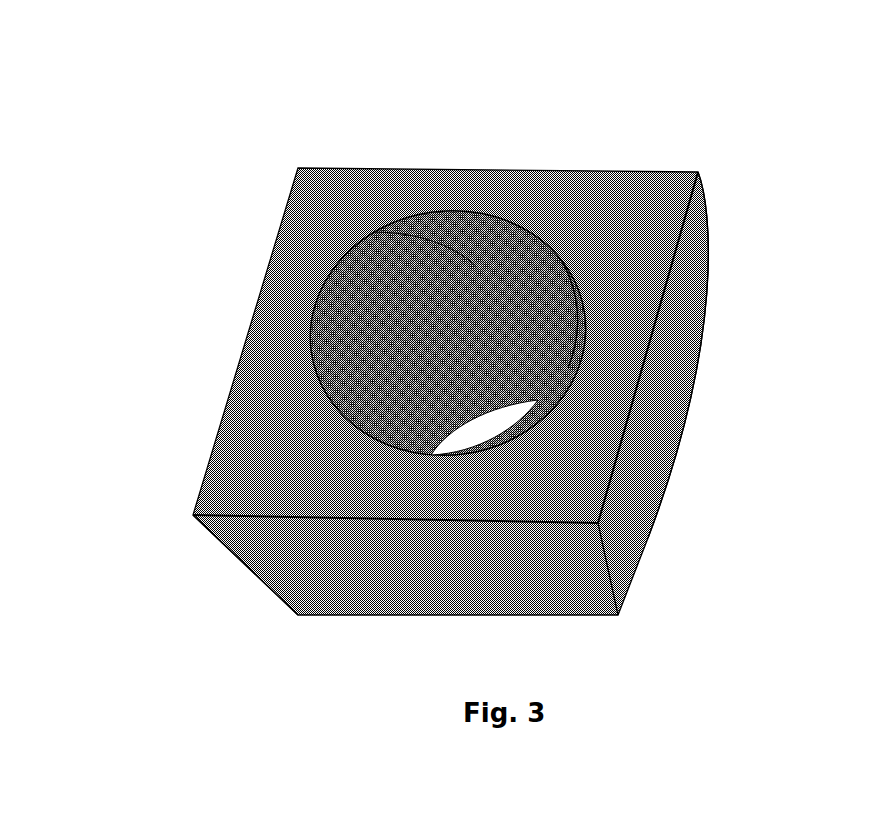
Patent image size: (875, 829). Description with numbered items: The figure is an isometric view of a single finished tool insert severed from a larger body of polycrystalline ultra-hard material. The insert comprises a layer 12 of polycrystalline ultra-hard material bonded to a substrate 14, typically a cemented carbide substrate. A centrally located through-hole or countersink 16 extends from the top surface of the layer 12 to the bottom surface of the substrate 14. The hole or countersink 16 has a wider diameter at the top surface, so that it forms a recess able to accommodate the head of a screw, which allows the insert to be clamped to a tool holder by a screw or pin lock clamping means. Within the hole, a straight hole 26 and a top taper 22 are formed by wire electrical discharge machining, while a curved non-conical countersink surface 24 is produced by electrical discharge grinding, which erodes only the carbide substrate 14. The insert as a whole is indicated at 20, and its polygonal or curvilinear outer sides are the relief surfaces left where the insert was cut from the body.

The layer of polycrystalline ultra-hard material 12 is at (528, 414).
The substrate 14 is at (633, 532).
The through-hole or countersink 16 is at (482, 398).
The reflector block 20 is at (514, 353).
The top taper 22 is at (443, 289).
The curved non-conical countersink surface 24 is at (528, 291).
The straight hole 26 is at (406, 389).